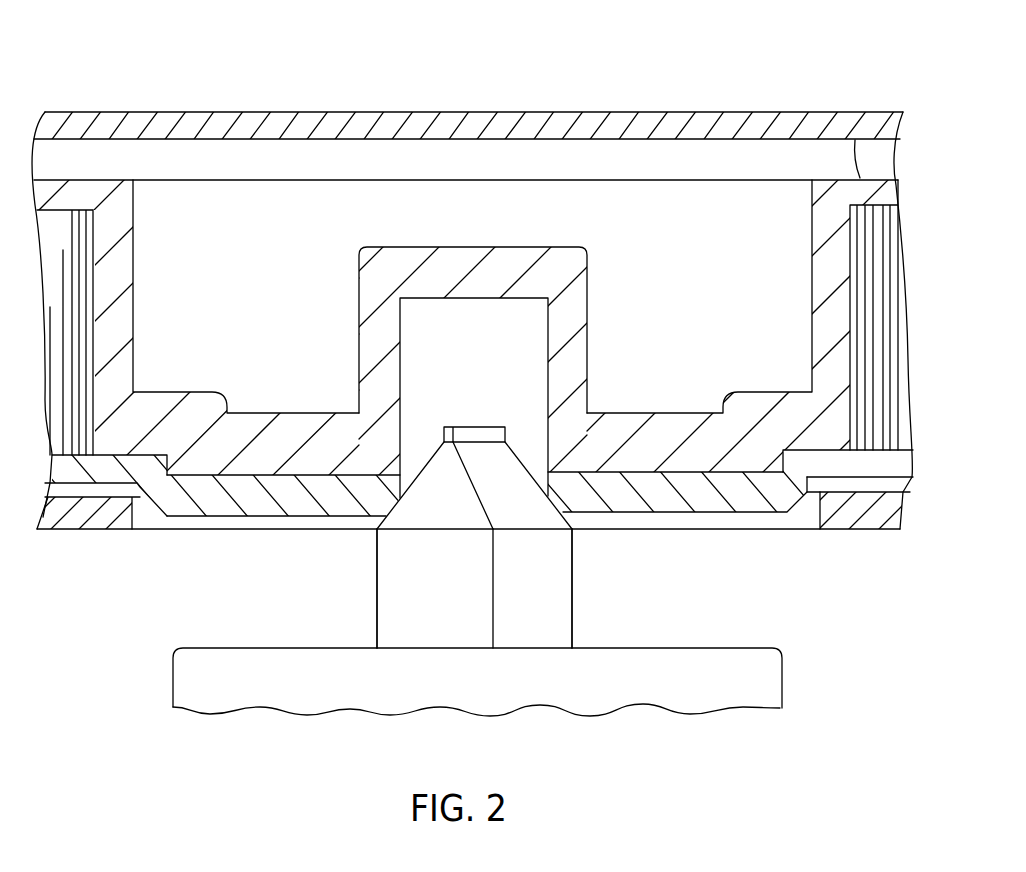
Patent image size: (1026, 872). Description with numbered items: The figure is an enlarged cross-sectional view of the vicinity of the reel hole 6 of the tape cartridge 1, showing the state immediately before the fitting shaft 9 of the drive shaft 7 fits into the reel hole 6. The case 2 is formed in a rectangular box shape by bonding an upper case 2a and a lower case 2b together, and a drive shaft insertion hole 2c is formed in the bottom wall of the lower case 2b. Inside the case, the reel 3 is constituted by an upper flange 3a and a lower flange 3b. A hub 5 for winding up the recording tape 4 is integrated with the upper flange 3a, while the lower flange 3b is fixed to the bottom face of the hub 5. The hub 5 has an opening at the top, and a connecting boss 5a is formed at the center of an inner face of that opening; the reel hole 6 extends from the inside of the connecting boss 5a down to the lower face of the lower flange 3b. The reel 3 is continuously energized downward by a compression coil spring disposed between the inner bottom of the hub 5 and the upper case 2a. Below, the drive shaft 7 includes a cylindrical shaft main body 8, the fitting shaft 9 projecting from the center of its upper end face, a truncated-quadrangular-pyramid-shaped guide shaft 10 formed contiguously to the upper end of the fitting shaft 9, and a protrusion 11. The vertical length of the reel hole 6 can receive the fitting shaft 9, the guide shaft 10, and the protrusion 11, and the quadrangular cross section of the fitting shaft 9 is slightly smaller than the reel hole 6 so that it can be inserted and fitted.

The tape cartridge 1 is at (427, 85).
The case 2 is at (310, 112).
The upper case 2a is at (173, 118).
The lower case 2b is at (118, 520).
The drive shaft insertion hole 2c is at (235, 523).
The reel 3 is at (491, 152).
The upper flange 3a is at (866, 112).
The lower flange 3b is at (897, 527).
The recording tape 4 is at (53, 530).
The hub 5 is at (812, 247).
The connecting boss 5a is at (588, 284).
The reel hole 6 is at (534, 320).
The drive shaft 7 is at (617, 597).
The shaft main body 8 is at (268, 668).
The fitting shaft 9 is at (385, 559).
The guide shaft 10 is at (438, 468).
The protrusion 11 is at (512, 427).